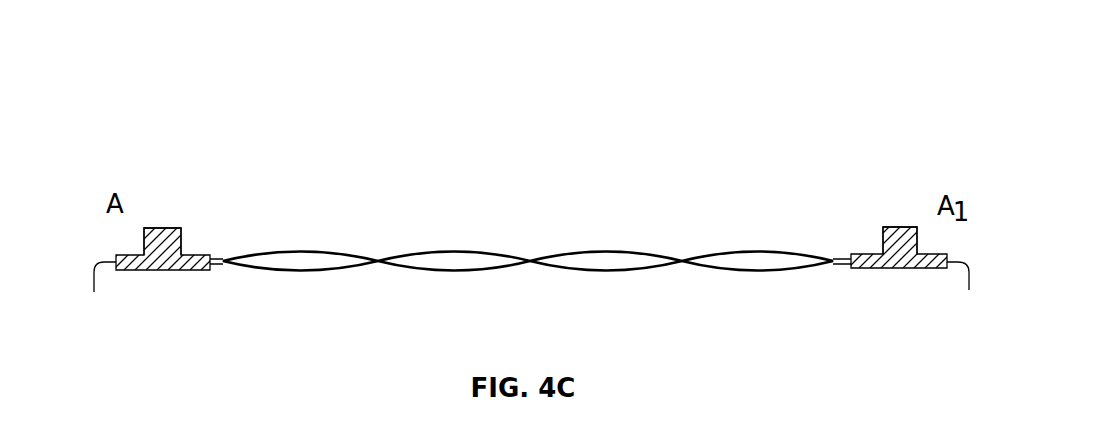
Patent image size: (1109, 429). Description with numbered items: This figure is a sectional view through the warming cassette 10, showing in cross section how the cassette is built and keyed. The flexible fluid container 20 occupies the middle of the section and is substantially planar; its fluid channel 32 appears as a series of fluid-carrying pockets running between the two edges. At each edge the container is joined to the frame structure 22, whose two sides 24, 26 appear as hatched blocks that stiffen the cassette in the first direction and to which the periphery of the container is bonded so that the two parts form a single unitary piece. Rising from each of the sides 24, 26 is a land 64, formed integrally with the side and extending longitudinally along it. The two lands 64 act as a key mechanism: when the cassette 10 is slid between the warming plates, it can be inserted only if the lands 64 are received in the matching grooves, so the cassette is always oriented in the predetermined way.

The warming cassette 10 is at (694, 143).
The flexible fluid container 20 is at (393, 317).
The frame structure 22 is at (171, 295).
The side 24 is at (967, 292).
The side 26 is at (96, 293).
The fluid channel 32 is at (303, 258).
The land 64 is at (167, 228).